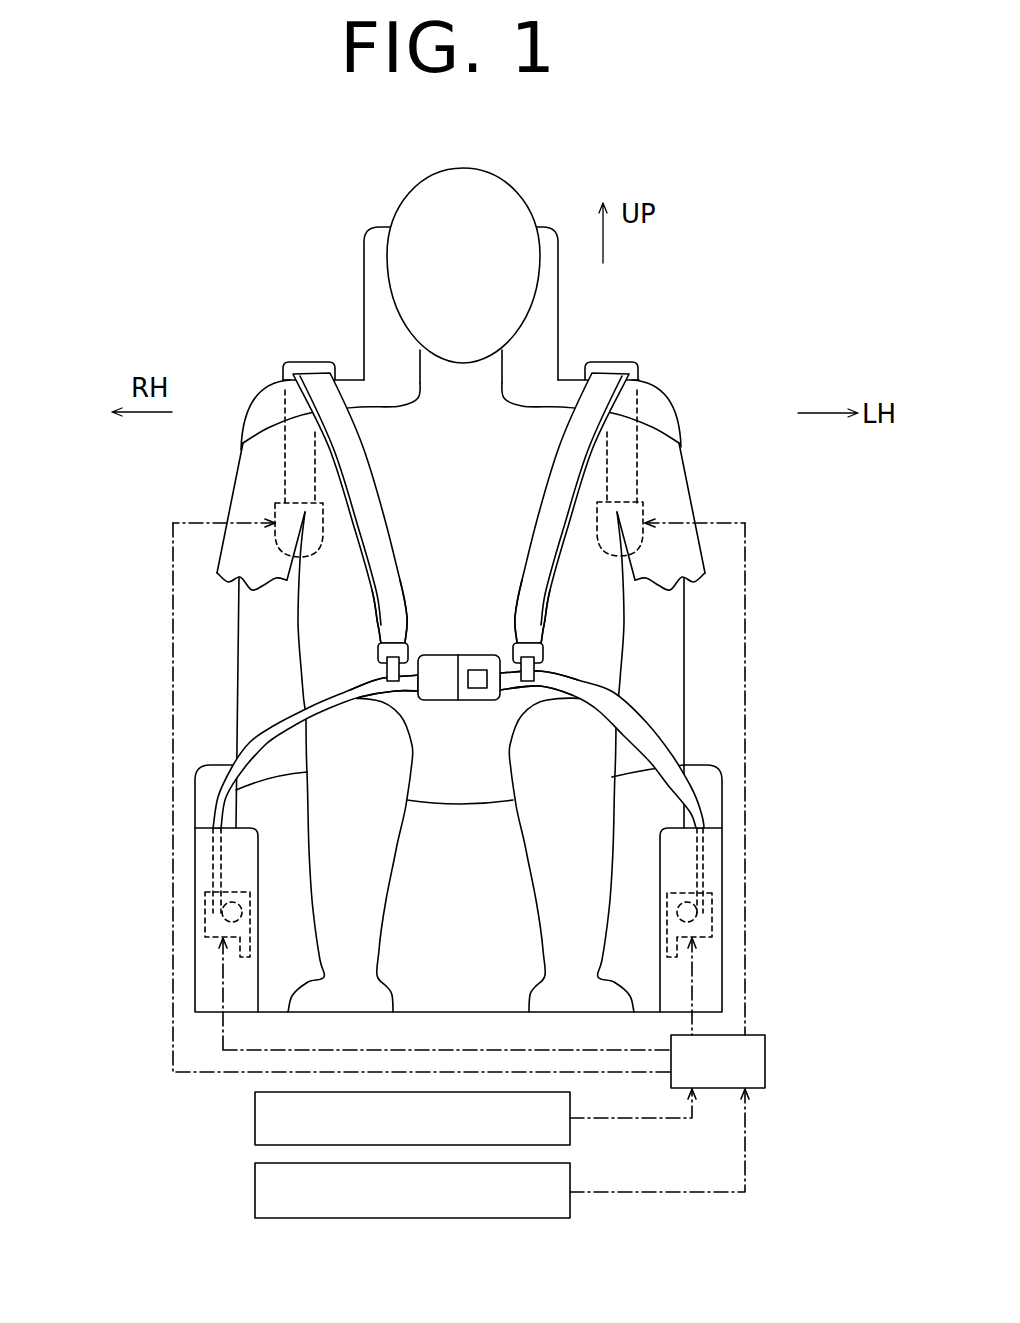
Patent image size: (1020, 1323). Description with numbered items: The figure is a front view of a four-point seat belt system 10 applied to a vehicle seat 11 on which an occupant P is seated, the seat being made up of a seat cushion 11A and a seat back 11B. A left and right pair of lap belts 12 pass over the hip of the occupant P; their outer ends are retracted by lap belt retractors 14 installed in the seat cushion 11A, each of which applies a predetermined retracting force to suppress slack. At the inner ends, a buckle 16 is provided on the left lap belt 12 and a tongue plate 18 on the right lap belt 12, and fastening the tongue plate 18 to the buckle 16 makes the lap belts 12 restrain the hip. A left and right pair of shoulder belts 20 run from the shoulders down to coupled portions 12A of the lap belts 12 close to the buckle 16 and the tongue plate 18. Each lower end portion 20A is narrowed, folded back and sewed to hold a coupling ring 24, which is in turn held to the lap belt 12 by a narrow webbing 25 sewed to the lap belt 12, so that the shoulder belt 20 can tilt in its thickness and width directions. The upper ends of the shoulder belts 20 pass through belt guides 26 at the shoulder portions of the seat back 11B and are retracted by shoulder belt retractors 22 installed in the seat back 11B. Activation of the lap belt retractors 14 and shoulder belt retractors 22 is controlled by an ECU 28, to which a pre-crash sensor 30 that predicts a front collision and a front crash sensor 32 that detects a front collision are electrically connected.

The four-point seat belt system 10 is at (505, 702).
The vehicle seat 11 is at (475, 639).
The seat cushion 11A is at (462, 995).
The seat back 11B is at (675, 420).
The lap belt 12 is at (447, 756).
The coupled portion 12A is at (358, 680).
The lap belt retractor 14 is at (250, 913).
The buckle 16 is at (459, 727).
The tongue plate 18 is at (442, 727).
The shoulder belt 20 is at (461, 508).
The lower end portion 20A is at (393, 641).
The shoulder belt retractor 22 is at (275, 503).
The coupling ring 24 is at (378, 643).
The narrow webbing 25 is at (397, 685).
The belt guide 26 is at (304, 362).
The ECU 28 is at (762, 1090).
The pre-crash sensor 30 is at (570, 1135).
The front crash sensor 32 is at (570, 1208).
The occupant P is at (702, 486).